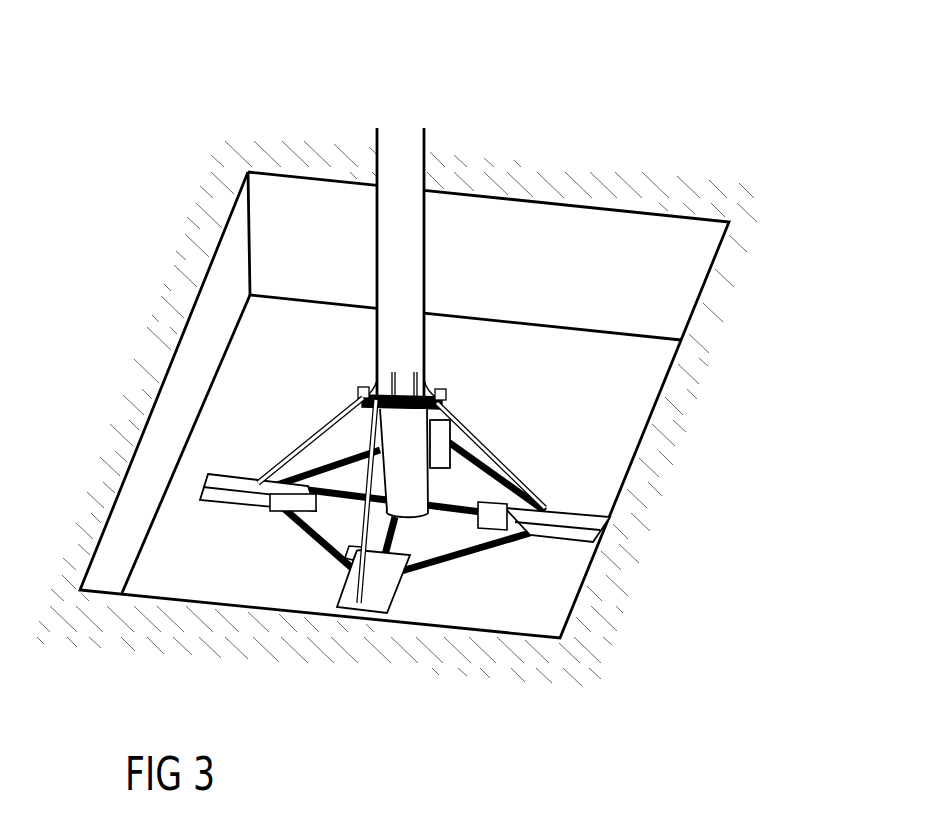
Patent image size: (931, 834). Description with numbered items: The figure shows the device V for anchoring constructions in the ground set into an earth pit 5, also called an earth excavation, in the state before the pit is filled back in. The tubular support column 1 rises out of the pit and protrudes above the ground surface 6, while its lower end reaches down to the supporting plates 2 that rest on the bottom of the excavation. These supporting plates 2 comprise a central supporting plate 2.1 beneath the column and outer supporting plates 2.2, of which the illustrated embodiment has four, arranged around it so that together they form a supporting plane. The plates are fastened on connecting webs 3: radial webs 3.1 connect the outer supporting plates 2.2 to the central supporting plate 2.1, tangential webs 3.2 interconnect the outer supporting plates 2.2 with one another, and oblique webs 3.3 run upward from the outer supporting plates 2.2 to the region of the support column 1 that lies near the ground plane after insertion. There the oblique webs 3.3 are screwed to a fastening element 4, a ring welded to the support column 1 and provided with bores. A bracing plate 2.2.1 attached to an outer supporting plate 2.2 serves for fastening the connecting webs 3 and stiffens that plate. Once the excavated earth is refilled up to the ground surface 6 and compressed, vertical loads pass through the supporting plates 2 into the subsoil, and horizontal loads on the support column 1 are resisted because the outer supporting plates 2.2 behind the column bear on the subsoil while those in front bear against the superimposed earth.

The device for anchoring constructions in the ground V is at (349, 124).
The tubular support column 1 is at (434, 139).
The supporting plates 2 is at (435, 545).
The central supporting plate 2.1 is at (432, 522).
The outer supporting plates 2.2 is at (445, 410).
The bracing plate 2.2.1 is at (256, 468).
The connecting webs 3 is at (403, 522).
The radial webs 3.1 is at (470, 507).
The tangential webs 3.2 is at (303, 540).
The oblique webs 3.3 is at (326, 430).
The fastening element 4 is at (440, 398).
The earth pit 5 is at (627, 407).
The ground surface 6 is at (692, 373).